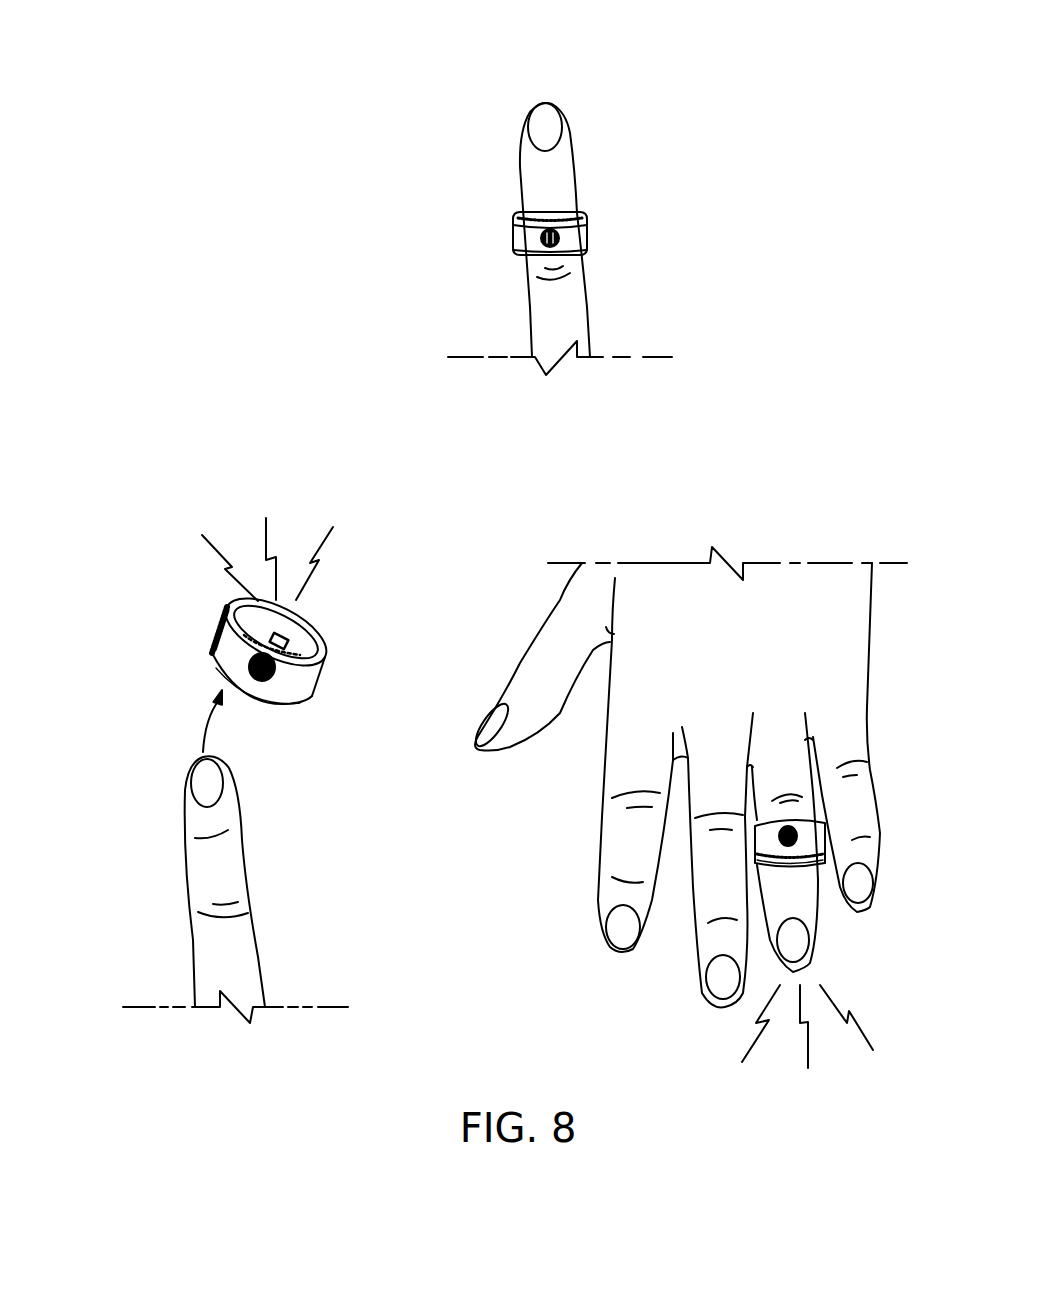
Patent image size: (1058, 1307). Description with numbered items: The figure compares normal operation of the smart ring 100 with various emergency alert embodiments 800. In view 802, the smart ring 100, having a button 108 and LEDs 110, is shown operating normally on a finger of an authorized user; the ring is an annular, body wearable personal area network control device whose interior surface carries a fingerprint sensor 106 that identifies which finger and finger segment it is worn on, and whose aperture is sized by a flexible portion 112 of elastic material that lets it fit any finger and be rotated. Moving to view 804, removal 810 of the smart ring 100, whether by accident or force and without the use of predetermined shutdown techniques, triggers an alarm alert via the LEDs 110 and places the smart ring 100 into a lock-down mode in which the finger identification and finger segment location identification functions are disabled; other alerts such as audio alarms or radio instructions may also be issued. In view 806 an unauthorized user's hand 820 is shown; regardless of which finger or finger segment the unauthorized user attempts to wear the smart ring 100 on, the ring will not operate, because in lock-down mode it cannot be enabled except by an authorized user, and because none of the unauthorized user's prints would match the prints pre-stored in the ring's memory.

The smart ring 100 is at (587, 230).
The fingerprint sensor 106 is at (290, 627).
The button 108 is at (540, 238).
The LEDs 110 is at (577, 210).
The flexible portion 112 is at (215, 628).
The emergency alert embodiments 800 is at (708, 43).
The view 802 is at (413, 327).
The view 804 is at (134, 955).
The view 806 is at (646, 1010).
The removal 810 is at (200, 725).
The unauthorized user hand 820 is at (871, 657).